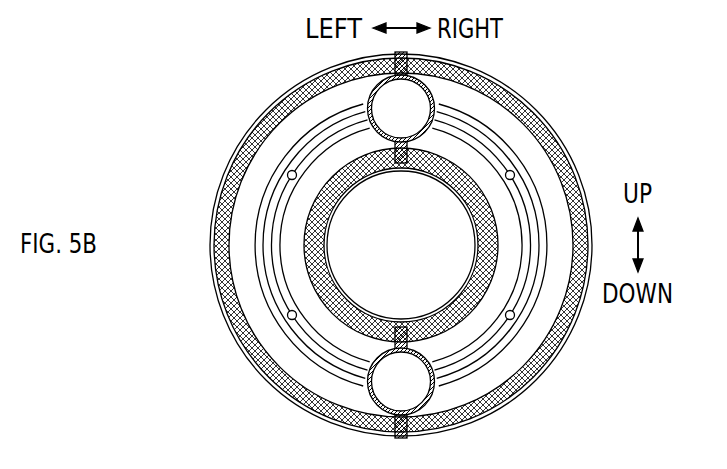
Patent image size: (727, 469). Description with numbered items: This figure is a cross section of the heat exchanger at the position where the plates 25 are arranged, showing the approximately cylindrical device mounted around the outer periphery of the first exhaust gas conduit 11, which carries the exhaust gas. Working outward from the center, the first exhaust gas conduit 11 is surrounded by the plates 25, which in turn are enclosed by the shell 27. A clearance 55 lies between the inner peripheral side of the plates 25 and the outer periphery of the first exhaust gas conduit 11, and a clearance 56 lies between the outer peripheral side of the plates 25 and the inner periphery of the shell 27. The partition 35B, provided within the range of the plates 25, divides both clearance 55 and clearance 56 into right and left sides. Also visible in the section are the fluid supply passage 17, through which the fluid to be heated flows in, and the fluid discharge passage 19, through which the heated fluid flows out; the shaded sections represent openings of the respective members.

The first exhaust gas conduit 11 is at (323, 240).
The fluid supply passage 17 is at (413, 387).
The fluid discharge passage 19 is at (406, 111).
The plates 25 is at (300, 108).
The shell 27 is at (213, 268).
The partition 35B is at (403, 163).
The clearance 55 is at (482, 205).
The clearance 56 is at (545, 132).